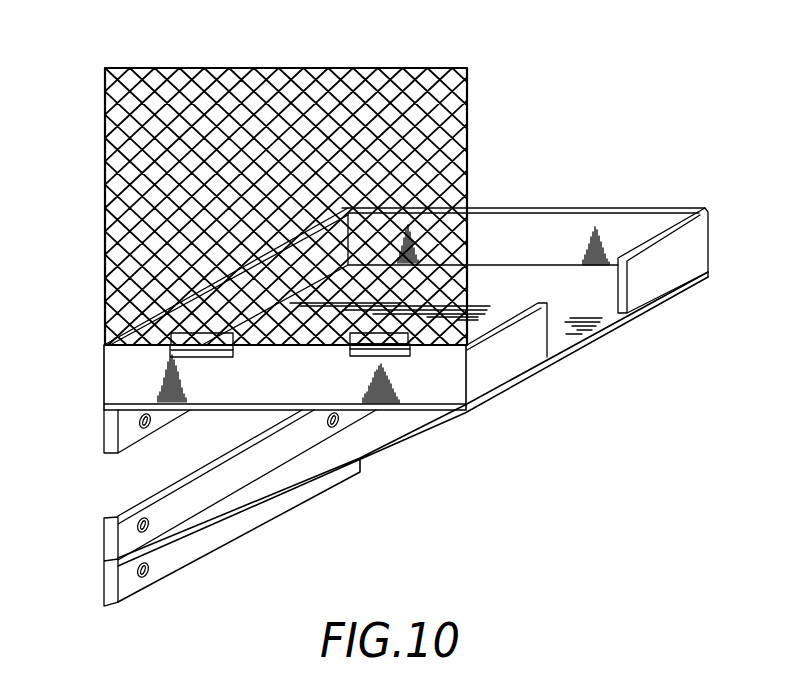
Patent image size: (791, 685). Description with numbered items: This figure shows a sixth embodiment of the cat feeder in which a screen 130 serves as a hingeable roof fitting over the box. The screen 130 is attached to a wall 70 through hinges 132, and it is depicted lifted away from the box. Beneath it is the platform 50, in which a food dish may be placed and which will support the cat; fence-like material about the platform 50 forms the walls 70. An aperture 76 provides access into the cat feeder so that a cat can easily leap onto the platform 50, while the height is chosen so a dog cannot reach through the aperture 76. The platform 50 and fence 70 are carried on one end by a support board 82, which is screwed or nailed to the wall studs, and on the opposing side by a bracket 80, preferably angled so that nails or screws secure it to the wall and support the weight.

The screen 130 is at (364, 68).
The hinges 132 is at (185, 348).
The walls 70 is at (452, 377).
The platform 50 is at (588, 333).
The aperture 76 is at (599, 297).
The support board 82 is at (110, 428).
The bracket 80 is at (168, 556).